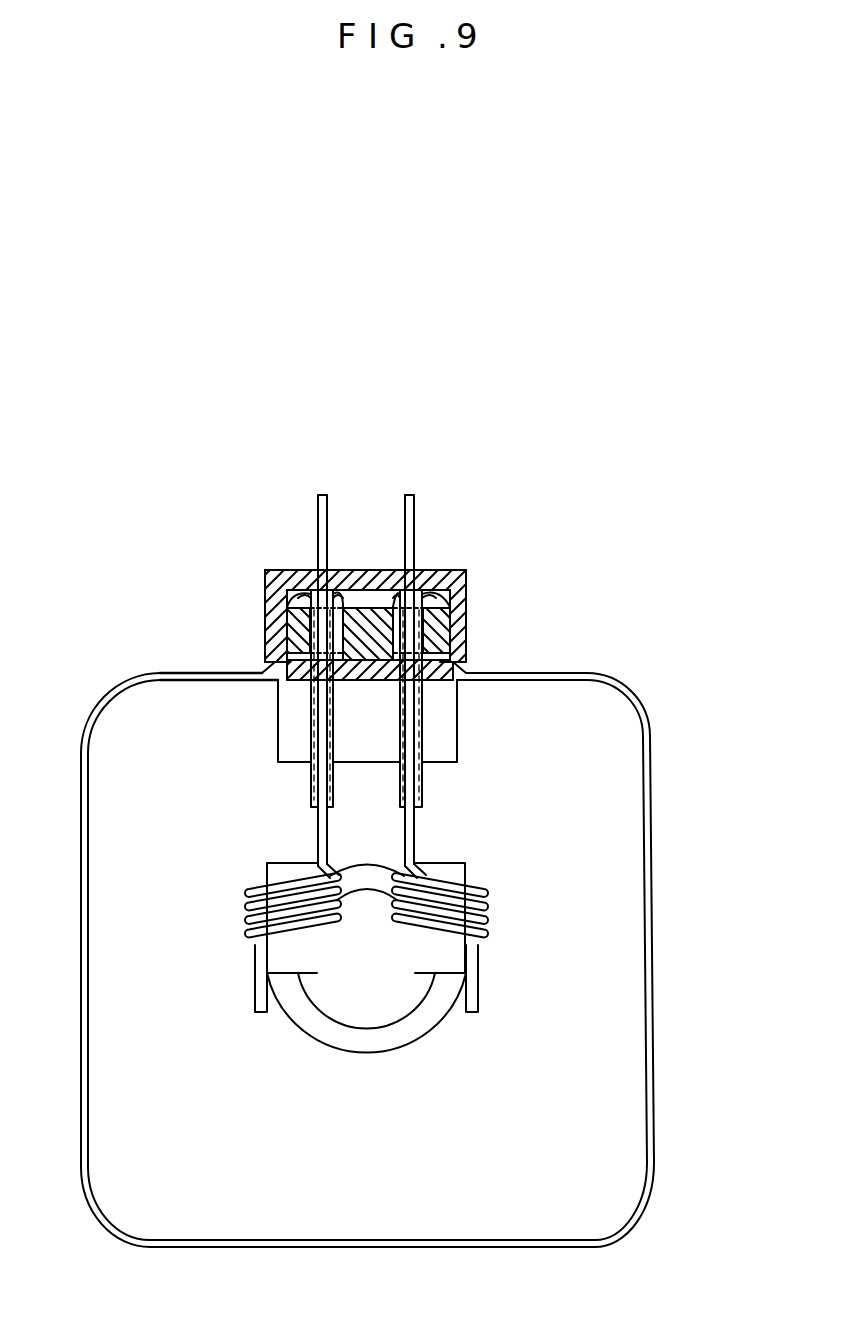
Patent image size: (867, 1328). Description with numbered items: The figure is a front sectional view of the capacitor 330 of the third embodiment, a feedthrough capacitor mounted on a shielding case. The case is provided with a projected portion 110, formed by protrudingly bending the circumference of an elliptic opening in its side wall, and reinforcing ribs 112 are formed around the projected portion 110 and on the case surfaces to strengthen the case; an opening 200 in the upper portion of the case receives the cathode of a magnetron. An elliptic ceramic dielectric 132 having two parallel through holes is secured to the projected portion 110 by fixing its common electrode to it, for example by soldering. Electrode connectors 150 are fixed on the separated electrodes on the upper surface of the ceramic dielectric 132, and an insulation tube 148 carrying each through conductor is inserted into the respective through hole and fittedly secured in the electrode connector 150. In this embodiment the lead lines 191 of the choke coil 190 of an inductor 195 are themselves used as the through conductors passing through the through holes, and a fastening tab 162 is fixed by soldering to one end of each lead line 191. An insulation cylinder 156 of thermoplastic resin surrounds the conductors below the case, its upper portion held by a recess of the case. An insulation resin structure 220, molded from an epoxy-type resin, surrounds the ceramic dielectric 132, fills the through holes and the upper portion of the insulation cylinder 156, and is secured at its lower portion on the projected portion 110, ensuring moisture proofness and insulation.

The capacitor 330 is at (642, 510).
The projected portion 110 is at (470, 672).
The reinforcing ribs 112 is at (210, 672).
The ceramic dielectric 132 is at (268, 613).
The electrode connectors 150 is at (296, 578).
The insulation resin structure 220 is at (469, 583).
The fastening tab 162 is at (419, 511).
The lead lines 191 is at (298, 603).
The insulation tube 148 is at (310, 789).
The insulation cylinder 156 is at (277, 704).
The inductor 195 is at (463, 868).
The choke coil 190 is at (491, 921).
The opening 200 is at (415, 1012).